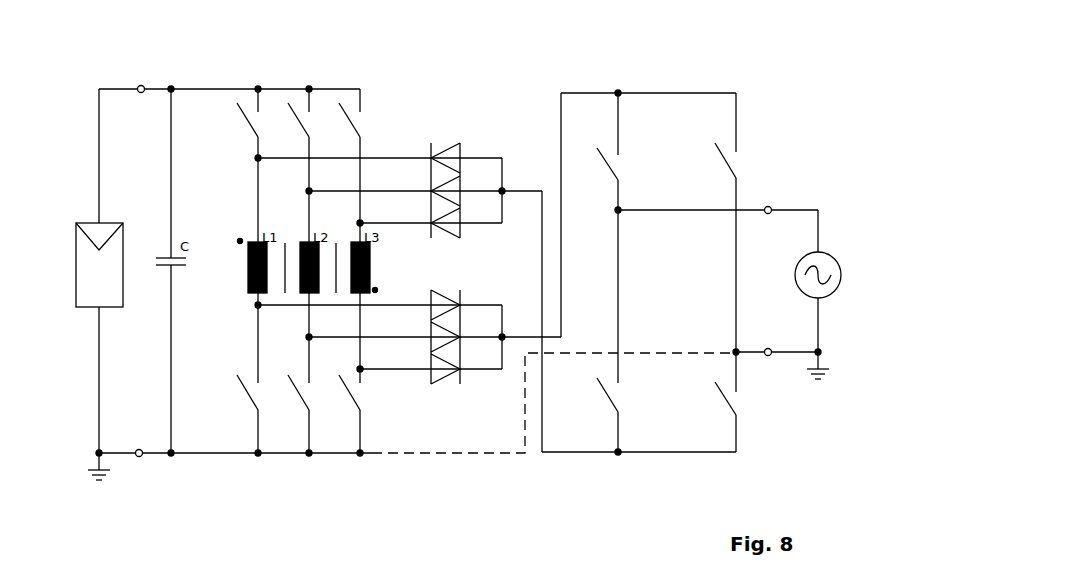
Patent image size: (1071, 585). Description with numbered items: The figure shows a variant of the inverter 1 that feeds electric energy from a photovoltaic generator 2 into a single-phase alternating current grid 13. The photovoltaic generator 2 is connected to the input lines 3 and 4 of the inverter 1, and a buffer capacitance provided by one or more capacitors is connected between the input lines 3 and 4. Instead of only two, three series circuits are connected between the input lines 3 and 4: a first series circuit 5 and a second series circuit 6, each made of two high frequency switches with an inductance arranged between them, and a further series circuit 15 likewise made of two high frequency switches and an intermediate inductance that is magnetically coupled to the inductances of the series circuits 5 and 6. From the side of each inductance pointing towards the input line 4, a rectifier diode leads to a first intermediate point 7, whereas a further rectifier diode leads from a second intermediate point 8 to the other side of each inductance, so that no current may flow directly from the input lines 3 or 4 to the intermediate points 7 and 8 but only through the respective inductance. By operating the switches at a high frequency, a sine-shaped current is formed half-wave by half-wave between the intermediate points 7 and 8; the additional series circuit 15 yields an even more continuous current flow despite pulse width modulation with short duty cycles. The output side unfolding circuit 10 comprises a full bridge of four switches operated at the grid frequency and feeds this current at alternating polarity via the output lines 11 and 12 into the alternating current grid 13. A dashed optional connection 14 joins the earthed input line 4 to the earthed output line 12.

The inverter 1 is at (752, 83).
The photovoltaic generator 2 is at (76, 293).
The input line 3 is at (193, 89).
The input line 4 is at (200, 455).
The first series circuit 5 is at (253, 463).
The second series circuit 6 is at (305, 463).
The first intermediate point 7 is at (503, 340).
The second intermediate point 8 is at (503, 189).
The unfolding circuit 10 is at (746, 127).
The output line 11 is at (750, 207).
The output line 12 is at (746, 355).
The alternating current grid 13 is at (826, 253).
The connection 14 is at (417, 458).
The further series circuit 15 is at (358, 464).